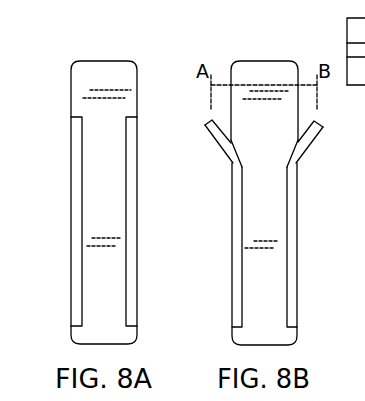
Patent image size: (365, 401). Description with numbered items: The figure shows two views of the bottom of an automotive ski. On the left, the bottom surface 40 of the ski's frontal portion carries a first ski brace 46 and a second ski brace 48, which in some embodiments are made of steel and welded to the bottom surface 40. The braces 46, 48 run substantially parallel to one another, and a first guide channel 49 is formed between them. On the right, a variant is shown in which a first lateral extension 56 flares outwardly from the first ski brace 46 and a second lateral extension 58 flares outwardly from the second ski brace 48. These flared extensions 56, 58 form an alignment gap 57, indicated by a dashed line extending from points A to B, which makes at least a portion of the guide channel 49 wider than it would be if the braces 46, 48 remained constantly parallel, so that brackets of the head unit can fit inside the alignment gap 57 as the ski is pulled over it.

In FIG. 8A, the bottom surface 40 is at (93, 75).
In FIG. 8A, the first ski brace 46 is at (78, 177).
In FIG. 8B, the first ski brace 46 is at (235, 218).
In FIG. 8A, the second ski brace 48 is at (132, 202).
In FIG. 8B, the second ski brace 48 is at (296, 212).
In FIG. 8A, the first guide channel 49 is at (107, 293).
In FIG. 8B, the first lateral extension 56 is at (205, 128).
In FIG. 8B, the alignment gap 57 is at (262, 85).
In FIG. 8B, the second lateral extension 58 is at (321, 130).